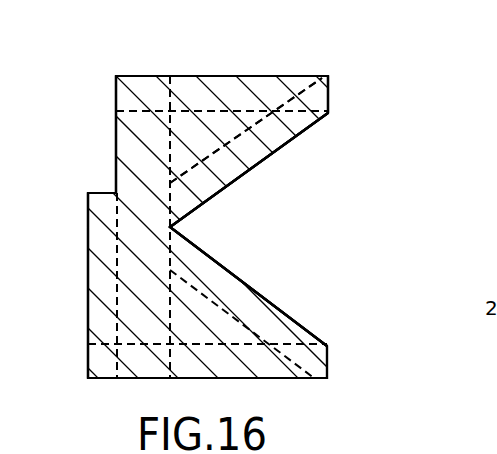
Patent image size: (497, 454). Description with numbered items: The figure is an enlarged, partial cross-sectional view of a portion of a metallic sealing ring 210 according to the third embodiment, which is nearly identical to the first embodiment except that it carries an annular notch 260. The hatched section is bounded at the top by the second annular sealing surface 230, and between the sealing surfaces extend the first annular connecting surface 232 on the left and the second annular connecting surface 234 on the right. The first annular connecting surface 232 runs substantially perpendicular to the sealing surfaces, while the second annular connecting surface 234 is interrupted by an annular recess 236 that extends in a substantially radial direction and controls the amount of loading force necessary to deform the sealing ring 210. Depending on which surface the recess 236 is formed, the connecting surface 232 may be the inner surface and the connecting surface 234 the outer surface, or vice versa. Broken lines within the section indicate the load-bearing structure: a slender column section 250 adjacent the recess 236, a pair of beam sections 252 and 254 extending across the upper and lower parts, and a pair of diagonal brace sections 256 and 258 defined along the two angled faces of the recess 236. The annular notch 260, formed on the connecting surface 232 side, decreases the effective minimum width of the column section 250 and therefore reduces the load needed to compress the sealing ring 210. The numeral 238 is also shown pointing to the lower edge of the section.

The metallic sealing ring 210 is at (78, 83).
The second annular sealing surface 230 is at (232, 75).
The first annular connecting surface 232 is at (88, 332).
The second annular connecting surface 234 is at (330, 84).
The annular recess 236 is at (275, 152).
The bottom surface 238 is at (292, 379).
The column section 250 is at (187, 264).
The beam section 252 is at (325, 127).
The beam section 254 is at (307, 328).
The diagonal brace section 256 is at (247, 150).
The diagonal brace section 258 is at (223, 293).
The annular notch 260 is at (95, 190).